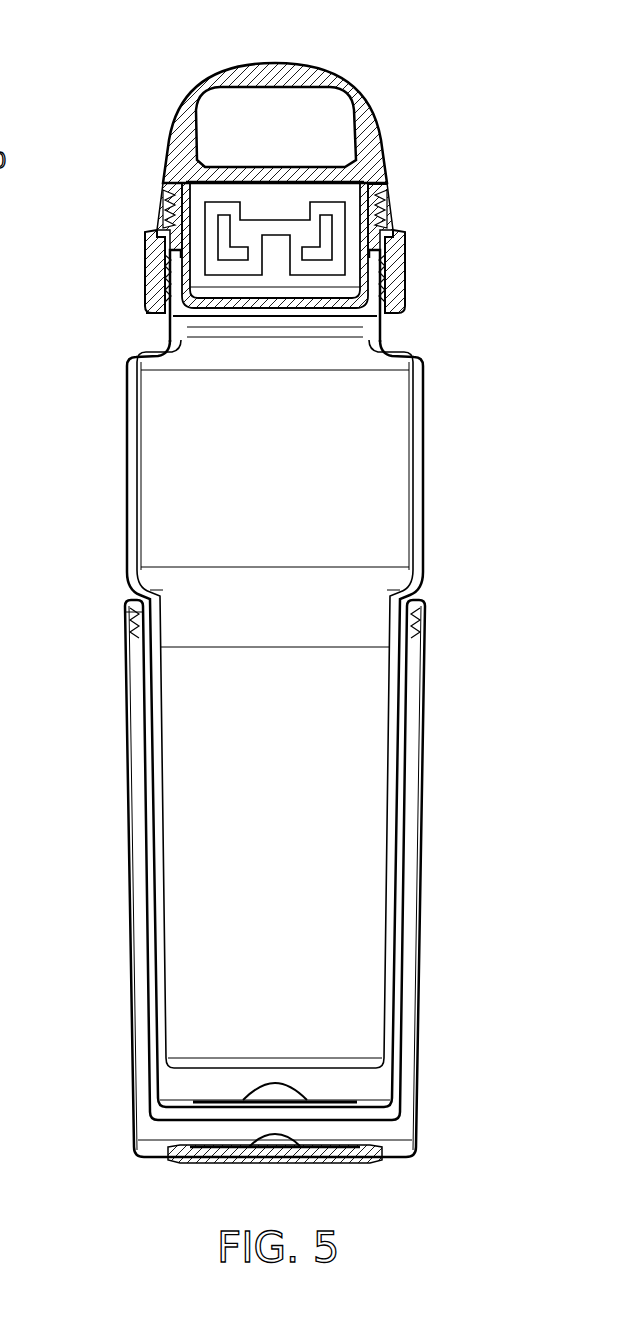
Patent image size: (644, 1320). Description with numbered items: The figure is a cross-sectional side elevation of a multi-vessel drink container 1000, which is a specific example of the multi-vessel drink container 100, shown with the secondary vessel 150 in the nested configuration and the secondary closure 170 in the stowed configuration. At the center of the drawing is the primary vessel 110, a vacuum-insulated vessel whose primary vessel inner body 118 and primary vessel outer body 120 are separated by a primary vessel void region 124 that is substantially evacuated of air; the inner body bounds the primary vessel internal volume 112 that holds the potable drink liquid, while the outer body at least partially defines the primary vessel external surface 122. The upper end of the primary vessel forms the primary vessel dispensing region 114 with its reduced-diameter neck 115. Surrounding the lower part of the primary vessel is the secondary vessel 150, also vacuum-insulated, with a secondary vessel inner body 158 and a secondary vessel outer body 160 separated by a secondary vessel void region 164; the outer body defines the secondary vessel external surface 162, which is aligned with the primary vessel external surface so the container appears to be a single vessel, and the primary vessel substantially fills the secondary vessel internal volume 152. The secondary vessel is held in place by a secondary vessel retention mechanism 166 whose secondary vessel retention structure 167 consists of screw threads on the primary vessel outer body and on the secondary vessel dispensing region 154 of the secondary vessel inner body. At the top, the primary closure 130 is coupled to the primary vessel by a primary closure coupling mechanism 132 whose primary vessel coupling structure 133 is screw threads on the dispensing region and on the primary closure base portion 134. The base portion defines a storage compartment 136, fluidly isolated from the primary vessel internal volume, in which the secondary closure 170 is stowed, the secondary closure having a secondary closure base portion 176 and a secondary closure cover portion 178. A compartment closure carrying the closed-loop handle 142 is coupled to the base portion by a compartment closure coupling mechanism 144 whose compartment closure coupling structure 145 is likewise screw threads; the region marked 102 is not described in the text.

The multi-vessel drink container 100 is at (160, 48).
The multi-vessel drink container 1000 is at (150, 82).
The primary closure 130 is at (122, 112).
The handle 142 is at (360, 92).
The secondary closure base portion 176 is at (352, 191).
The secondary closure 170 is at (275, 217).
The secondary closure cover portion 178 is at (305, 247).
The cap thread region 102 is at (166, 196).
The storage compartment 136 is at (378, 176).
The compartment closure coupling structure 145 is at (375, 218).
The compartment closure coupling mechanism 144 is at (374, 180).
The primary vessel dispensing region 114 is at (157, 262).
The neck 115 is at (160, 275).
The primary vessel coupling structure 133 is at (160, 285).
The primary closure coupling mechanism 132 is at (163, 302).
The primary closure base portion 134 is at (406, 240).
The primary vessel 110 is at (115, 467).
The primary vessel internal volume 112 is at (362, 425).
The primary vessel outer body 120 is at (430, 477).
The primary vessel inner body 118 is at (412, 458).
The primary vessel void region 124 is at (416, 518).
The primary vessel external surface 122 is at (426, 520).
The secondary vessel 150 is at (113, 767).
The secondary vessel outer body 160 is at (430, 840).
The secondary vessel void region 164 is at (413, 897).
The secondary vessel external surface 162 is at (420, 913).
The secondary vessel inner body 158 is at (412, 810).
The secondary vessel internal volume 152 is at (362, 753).
The secondary vessel dispensing region 154 is at (126, 605).
The secondary vessel retention mechanism 166 is at (136, 605).
The secondary vessel retention structure 167 is at (136, 622).